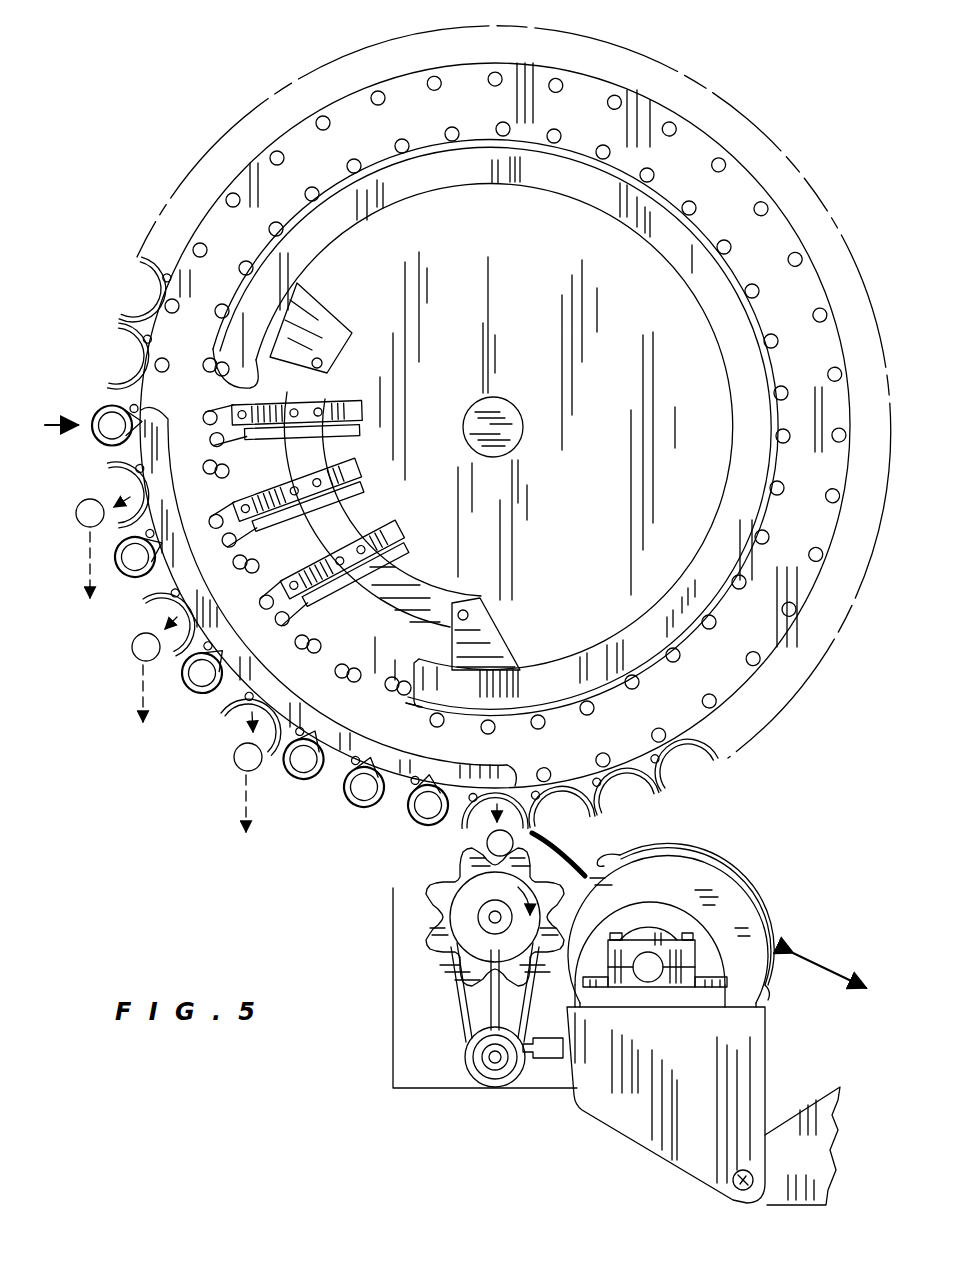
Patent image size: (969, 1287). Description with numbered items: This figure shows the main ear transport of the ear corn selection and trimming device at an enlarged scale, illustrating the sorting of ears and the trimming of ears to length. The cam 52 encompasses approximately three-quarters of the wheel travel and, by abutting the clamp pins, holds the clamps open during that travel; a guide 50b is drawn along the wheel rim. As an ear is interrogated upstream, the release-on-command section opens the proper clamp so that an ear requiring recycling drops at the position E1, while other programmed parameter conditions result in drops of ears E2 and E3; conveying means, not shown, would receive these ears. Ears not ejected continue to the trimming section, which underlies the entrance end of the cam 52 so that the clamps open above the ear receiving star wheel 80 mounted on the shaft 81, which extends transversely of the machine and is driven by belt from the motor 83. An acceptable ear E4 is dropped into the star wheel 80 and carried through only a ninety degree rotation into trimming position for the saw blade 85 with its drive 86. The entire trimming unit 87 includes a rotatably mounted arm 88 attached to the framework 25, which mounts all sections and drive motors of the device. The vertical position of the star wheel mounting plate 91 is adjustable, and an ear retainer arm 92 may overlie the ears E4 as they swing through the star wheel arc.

The cam 52 is at (593, 192).
The guide rail 50b is at (328, 627).
The ear drop position E1 is at (82, 502).
The dropped ear E2 is at (132, 647).
The dropped ear E3 is at (234, 757).
The acceptable ear E4 is at (487, 837).
The ear receiving star wheel 80 is at (430, 935).
The shaft 81 is at (489, 917).
The motor 83 is at (483, 1090).
The trimming saw blade 85 is at (735, 932).
The drive 86 is at (648, 960).
The trimming unit 87 is at (742, 886).
The rotatably mounted arm 88 is at (615, 1132).
The star wheel mounting plate 91 is at (405, 995).
The ear retainer arm 92 is at (547, 843).
The framework 25 is at (817, 1168).